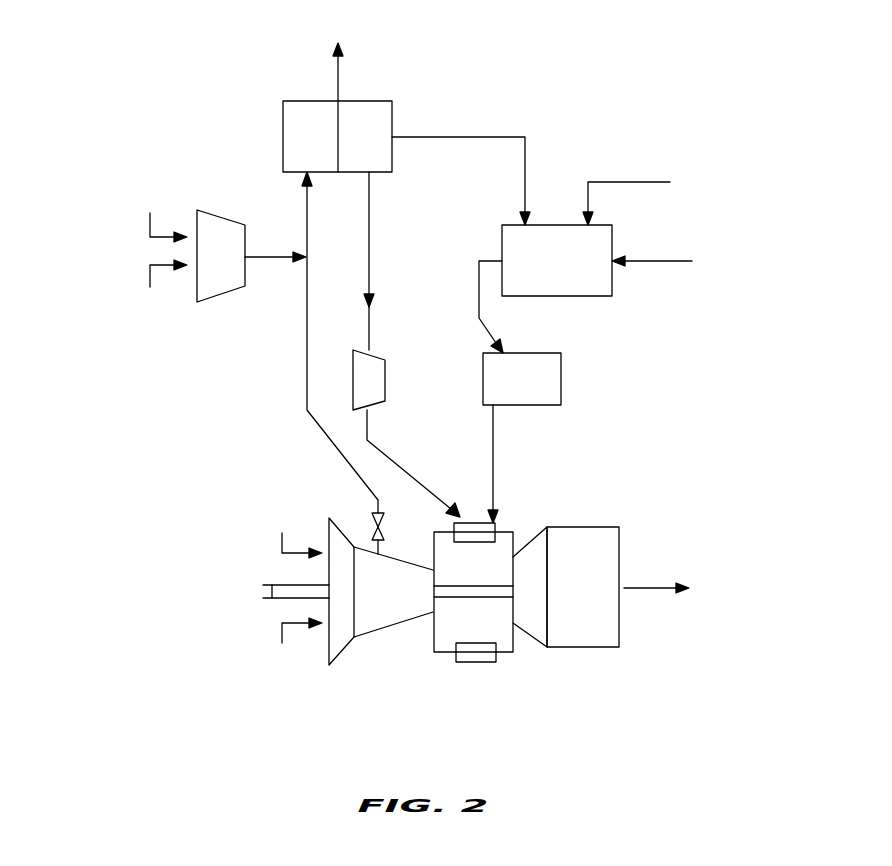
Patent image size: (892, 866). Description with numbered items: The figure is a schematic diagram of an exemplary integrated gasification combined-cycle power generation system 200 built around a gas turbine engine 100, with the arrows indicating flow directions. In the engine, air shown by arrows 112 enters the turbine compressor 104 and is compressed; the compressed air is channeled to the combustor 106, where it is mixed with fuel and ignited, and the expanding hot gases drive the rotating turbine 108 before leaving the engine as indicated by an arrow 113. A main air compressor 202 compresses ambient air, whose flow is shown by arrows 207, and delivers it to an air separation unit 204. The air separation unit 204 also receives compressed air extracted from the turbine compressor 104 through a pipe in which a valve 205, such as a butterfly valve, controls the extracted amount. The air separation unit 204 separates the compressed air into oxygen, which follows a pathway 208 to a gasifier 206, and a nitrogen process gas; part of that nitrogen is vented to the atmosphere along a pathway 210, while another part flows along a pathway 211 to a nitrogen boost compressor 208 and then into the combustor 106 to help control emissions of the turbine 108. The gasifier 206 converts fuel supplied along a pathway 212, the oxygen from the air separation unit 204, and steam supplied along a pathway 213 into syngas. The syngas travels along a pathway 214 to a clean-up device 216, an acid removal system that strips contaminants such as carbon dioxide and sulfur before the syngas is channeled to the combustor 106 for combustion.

The gas turbine engine 100 is at (330, 684).
The turbine compressor 104 is at (385, 610).
The combustor 106 is at (475, 532).
The turbine 108 is at (532, 618).
The air flow arrows 112 is at (282, 642).
The exhaust flow arrow 113 is at (647, 586).
The integrated gasification combined-cycle power generation system 200 is at (168, 114).
The main air compressor 202 is at (221, 256).
The air separation unit 204 is at (305, 147).
The valve 205 is at (370, 515).
The gasifier 206 is at (572, 270).
The ambient air flow arrows 207 is at (148, 273).
The oxygen pathway / nitrogen boost compressor 208 is at (495, 137).
The nitrogen vent pathway 210 is at (336, 88).
The nitrogen process gas pathway 211 is at (369, 237).
The fuel pathway 212 is at (637, 182).
The steam pathway 213 is at (672, 261).
The syngas pathway 214 is at (478, 300).
The clean-up device 216 is at (522, 378).